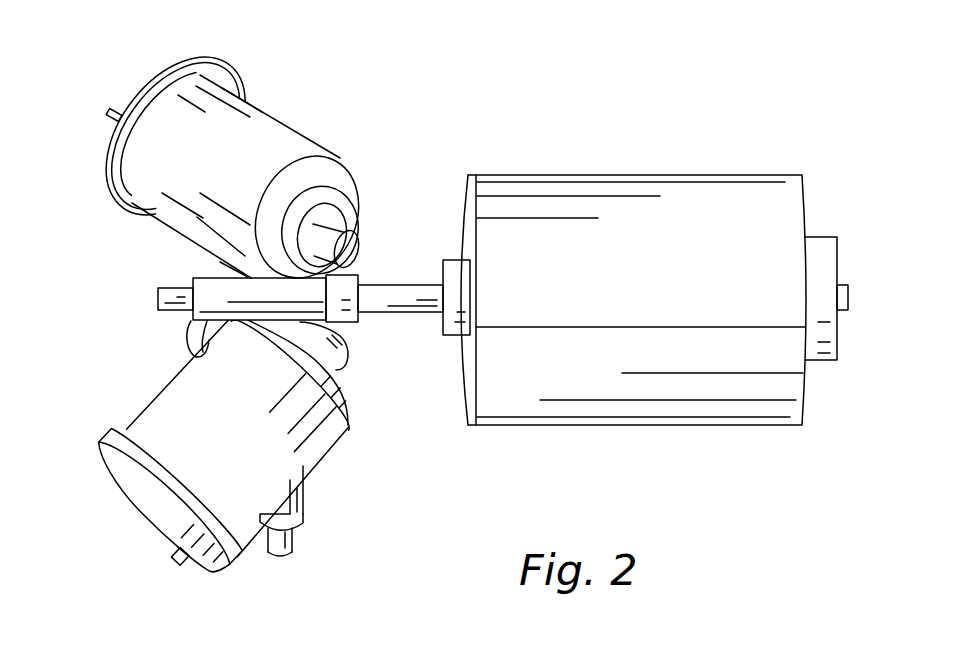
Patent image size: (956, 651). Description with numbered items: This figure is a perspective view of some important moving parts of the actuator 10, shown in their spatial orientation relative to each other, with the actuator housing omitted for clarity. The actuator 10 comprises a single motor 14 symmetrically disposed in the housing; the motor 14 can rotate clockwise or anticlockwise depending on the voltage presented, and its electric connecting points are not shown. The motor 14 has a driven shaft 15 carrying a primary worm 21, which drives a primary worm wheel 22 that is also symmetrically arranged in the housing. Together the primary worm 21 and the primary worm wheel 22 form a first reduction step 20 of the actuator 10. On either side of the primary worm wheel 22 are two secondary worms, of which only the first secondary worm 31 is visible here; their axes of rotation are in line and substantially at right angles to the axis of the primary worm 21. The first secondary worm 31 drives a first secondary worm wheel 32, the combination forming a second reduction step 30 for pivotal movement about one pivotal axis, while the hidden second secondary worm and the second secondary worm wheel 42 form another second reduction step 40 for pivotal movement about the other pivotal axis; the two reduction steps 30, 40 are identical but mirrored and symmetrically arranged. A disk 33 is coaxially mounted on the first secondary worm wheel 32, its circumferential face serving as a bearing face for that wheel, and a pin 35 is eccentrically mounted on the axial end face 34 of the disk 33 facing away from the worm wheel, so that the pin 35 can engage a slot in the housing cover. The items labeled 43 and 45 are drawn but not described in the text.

The actuator 10 is at (649, 130).
The motor 14 is at (680, 357).
The driven shaft 15 is at (393, 290).
The first reduction step 20 is at (100, 303).
The primary worm 21 is at (235, 293).
The primary worm wheel 22 is at (192, 340).
The second reduction step 30 is at (96, 503).
The first secondary worm 31 is at (293, 507).
The first secondary worm wheel 32 is at (242, 427).
The disk 33 is at (218, 557).
The axial end face 34 is at (165, 502).
The pin 35 is at (180, 557).
The second reduction step 40 is at (104, 230).
The second secondary worm wheel 42 is at (270, 132).
The mounting flange 43 is at (165, 76).
The terminal 45 is at (106, 118).